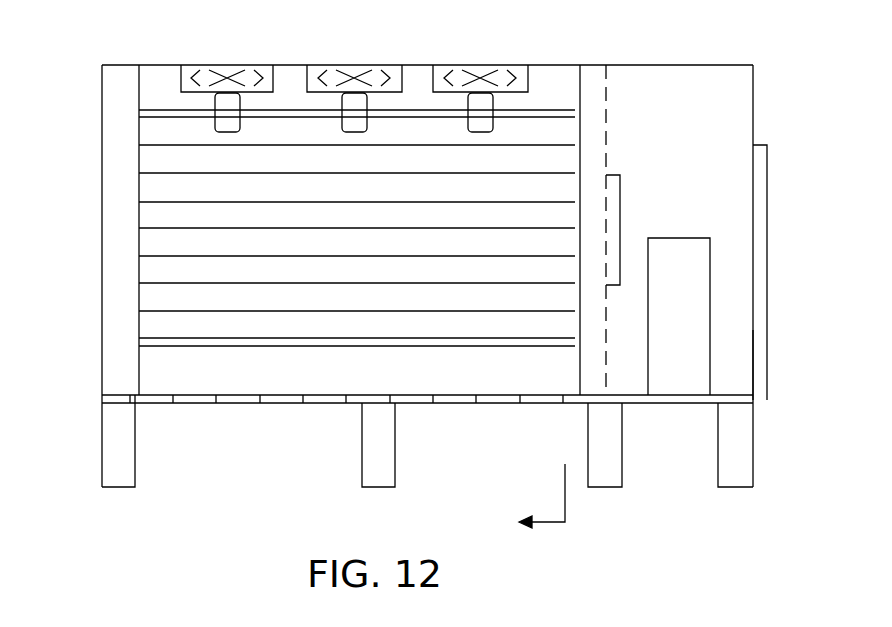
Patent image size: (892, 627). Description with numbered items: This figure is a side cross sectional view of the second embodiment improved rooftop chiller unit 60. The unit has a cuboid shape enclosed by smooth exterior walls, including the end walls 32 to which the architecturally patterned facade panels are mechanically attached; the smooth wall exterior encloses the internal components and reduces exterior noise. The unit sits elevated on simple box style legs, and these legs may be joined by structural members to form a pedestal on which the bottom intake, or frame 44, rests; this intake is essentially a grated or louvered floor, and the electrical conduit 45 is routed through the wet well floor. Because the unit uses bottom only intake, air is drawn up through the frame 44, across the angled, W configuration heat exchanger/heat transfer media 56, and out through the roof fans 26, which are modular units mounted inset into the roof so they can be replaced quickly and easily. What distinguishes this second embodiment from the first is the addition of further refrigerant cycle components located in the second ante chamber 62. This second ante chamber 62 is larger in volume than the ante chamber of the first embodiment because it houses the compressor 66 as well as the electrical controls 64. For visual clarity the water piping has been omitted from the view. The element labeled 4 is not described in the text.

The frame side member 4 is at (760, 287).
The fans 26 is at (517, 72).
The end walls 32 is at (753, 338).
The bottom intake 44 is at (235, 405).
The electrical conduit 45 is at (755, 405).
The heat exchanger/heat transfer media 56 is at (175, 228).
The second embodiment improved rooftop chiller unit 60 is at (102, 135).
The second ante chamber 62 is at (738, 186).
The electrical controls 64 is at (612, 190).
The compressor 66 is at (676, 361).